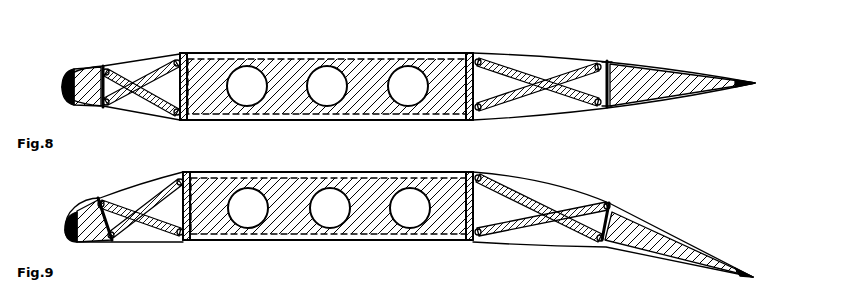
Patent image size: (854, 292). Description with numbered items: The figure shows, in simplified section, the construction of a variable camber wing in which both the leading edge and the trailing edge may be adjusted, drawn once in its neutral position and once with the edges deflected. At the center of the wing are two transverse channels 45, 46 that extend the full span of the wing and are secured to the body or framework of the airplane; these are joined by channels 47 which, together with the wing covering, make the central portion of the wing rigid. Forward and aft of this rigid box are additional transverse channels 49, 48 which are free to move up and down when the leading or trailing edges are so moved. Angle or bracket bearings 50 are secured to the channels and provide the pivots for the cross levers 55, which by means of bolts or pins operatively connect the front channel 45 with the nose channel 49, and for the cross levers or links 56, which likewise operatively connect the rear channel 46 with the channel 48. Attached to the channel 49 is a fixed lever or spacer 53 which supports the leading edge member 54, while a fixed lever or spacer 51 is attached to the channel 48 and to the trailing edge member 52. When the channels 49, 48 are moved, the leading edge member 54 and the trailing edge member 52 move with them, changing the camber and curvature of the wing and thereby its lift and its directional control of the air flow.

In FIG. 8, the transverse channel 45 is at (180, 97).
In FIG. 9, the transverse channel 45 is at (183, 222).
In FIG. 8, the transverse channel 46 is at (475, 80).
In FIG. 9, the transverse channel 46 is at (476, 205).
In FIG. 8, the connecting channel 47 is at (326, 86).
In FIG. 9, the connecting channel 47 is at (328, 206).
In FIG. 8, the additional transverse channel 48 is at (608, 62).
In FIG. 9, the additional transverse channel 48 is at (612, 207).
In FIG. 8, the additional transverse channel 49 is at (103, 68).
In FIG. 9, the additional transverse channel 49 is at (96, 200).
In FIG. 8, the angle or bracket bearing 50 is at (108, 70).
In FIG. 9, the angle or bracket bearing 50 is at (101, 203).
In FIG. 8, the fixed lever or spacer 51 is at (660, 85).
In FIG. 9, the fixed lever or spacer 51 is at (655, 232).
In FIG. 8, the trailing edge member 52 is at (750, 82).
In FIG. 9, the trailing edge member 52 is at (735, 270).
In FIG. 8, the fixed lever or spacer 53 is at (84, 80).
In FIG. 9, the fixed lever or spacer 53 is at (75, 222).
In FIG. 8, the leading edge member 54 is at (62, 85).
In FIG. 9, the leading edge member 54 is at (65, 235).
In FIG. 8, the cross lever 55 is at (160, 75).
In FIG. 9, the cross lever 55 is at (155, 203).
In FIG. 8, the cross lever or link 56 is at (565, 82).
In FIG. 9, the cross lever or link 56 is at (565, 210).